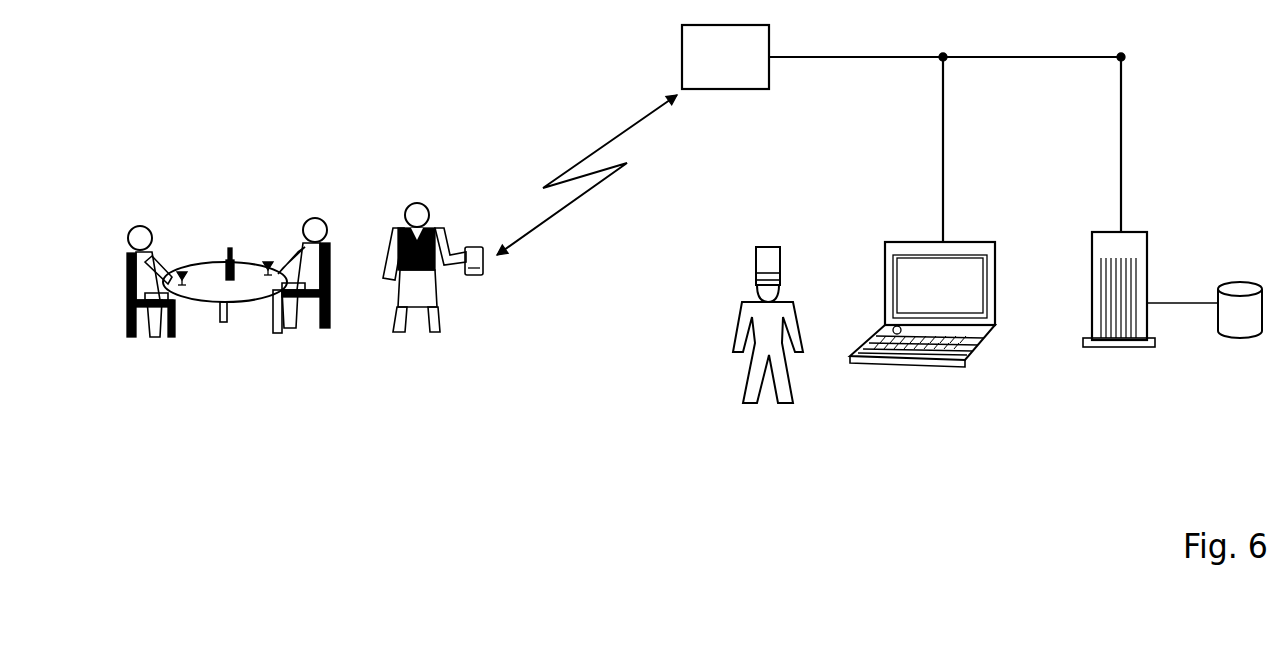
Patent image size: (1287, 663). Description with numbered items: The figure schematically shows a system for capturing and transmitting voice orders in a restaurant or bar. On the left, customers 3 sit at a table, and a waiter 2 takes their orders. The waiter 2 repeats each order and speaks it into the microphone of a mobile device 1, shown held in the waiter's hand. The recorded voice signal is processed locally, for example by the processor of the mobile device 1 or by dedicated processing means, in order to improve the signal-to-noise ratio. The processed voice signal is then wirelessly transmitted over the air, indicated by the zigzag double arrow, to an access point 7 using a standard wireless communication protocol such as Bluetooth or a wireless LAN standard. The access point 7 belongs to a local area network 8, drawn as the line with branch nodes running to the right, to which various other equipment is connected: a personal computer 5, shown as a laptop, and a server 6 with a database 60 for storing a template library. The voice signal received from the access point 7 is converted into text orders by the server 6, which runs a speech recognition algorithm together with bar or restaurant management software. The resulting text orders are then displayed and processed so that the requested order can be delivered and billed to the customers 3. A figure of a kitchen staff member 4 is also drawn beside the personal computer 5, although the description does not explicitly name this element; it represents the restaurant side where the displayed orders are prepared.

The mobile device 1 is at (458, 232).
The waiter 2 is at (407, 327).
The customers 3 is at (145, 220).
The kitchen staff / cook 4 is at (787, 370).
The personal computer 5 is at (977, 353).
The server 6 is at (1122, 347).
The access point 7 is at (725, 57).
The local area network 8 is at (823, 58).
The database 60 is at (1240, 310).